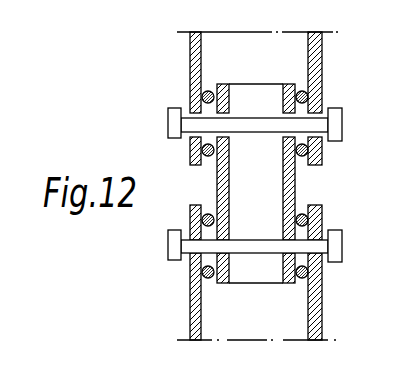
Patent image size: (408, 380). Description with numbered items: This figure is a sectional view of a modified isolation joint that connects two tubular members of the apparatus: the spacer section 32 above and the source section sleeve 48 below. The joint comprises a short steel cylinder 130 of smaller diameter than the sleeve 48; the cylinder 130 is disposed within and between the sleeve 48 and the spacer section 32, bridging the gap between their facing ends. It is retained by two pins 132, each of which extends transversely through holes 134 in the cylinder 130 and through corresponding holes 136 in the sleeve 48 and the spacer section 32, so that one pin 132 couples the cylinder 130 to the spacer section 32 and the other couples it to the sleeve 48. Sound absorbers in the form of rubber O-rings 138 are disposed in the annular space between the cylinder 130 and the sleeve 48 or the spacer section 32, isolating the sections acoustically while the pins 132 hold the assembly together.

The spacer section 32 is at (190, 52).
The source section sleeve 48 is at (192, 304).
The short steel cylinder 130 is at (295, 189).
The pins 132 is at (334, 126).
The holes in the cylinder 134 is at (232, 259).
The holes in the sleeve and spacer section 136 is at (322, 256).
The rubber O-rings 138 is at (202, 93).